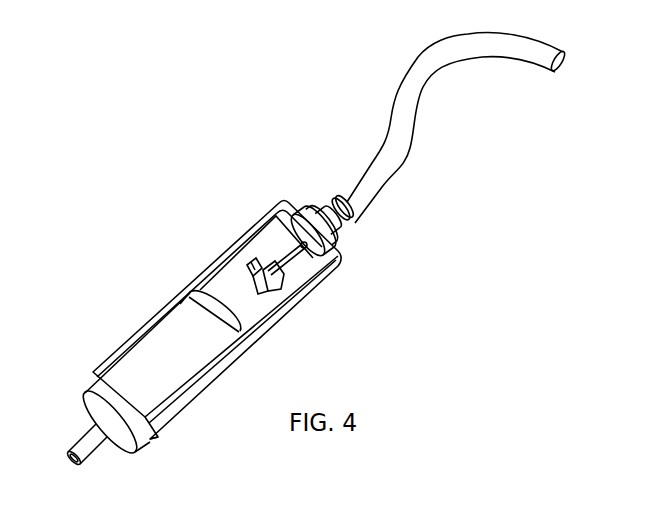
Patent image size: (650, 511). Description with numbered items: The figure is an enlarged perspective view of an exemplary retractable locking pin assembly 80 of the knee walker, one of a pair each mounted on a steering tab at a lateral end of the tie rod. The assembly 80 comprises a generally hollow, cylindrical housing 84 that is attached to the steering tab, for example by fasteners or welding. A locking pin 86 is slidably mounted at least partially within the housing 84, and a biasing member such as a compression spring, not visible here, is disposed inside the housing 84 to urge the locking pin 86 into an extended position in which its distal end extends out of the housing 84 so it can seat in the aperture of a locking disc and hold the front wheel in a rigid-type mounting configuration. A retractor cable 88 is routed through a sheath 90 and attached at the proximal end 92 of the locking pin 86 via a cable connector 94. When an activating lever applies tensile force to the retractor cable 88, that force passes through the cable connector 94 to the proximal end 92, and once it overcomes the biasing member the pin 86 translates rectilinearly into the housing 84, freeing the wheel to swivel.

The retractable locking pin assembly 80 is at (212, 130).
The housing 84 is at (167, 340).
The locking pin 86 is at (80, 437).
The retractor cable 88 is at (284, 263).
The sheath 90 is at (403, 138).
The proximal end 92 is at (231, 302).
The cable connector 94 is at (251, 295).